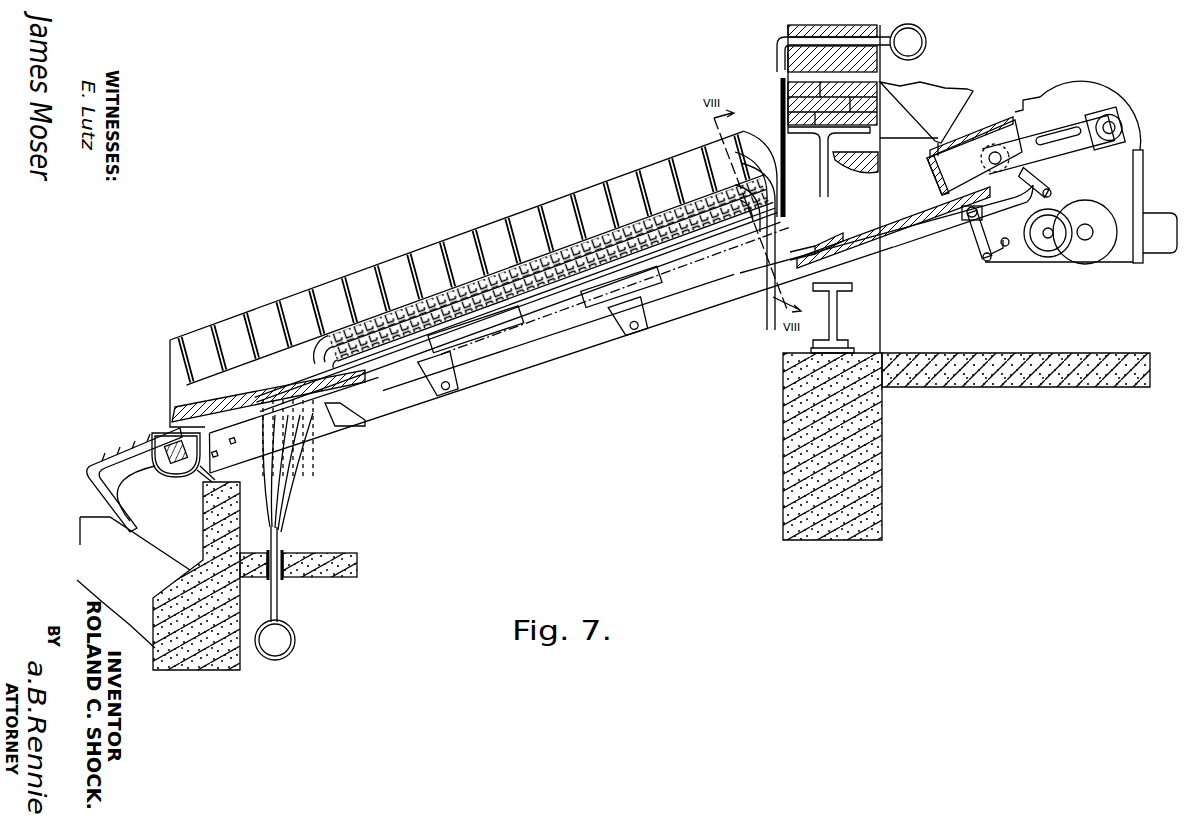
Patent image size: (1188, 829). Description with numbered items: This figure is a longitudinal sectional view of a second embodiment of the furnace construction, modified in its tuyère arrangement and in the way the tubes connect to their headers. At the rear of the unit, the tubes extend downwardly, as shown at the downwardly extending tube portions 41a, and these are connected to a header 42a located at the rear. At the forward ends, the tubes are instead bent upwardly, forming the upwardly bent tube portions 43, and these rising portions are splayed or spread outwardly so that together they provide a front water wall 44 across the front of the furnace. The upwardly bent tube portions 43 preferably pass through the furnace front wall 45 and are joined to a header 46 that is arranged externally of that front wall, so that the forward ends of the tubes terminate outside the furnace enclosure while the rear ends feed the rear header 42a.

The downwardly extending tube portions 41a is at (293, 505).
The header 42a is at (295, 632).
The upwardly bent tube portions 43 is at (780, 116).
The front water wall 44 is at (771, 100).
The furnace front wall 45 is at (875, 66).
The header 46 is at (926, 36).